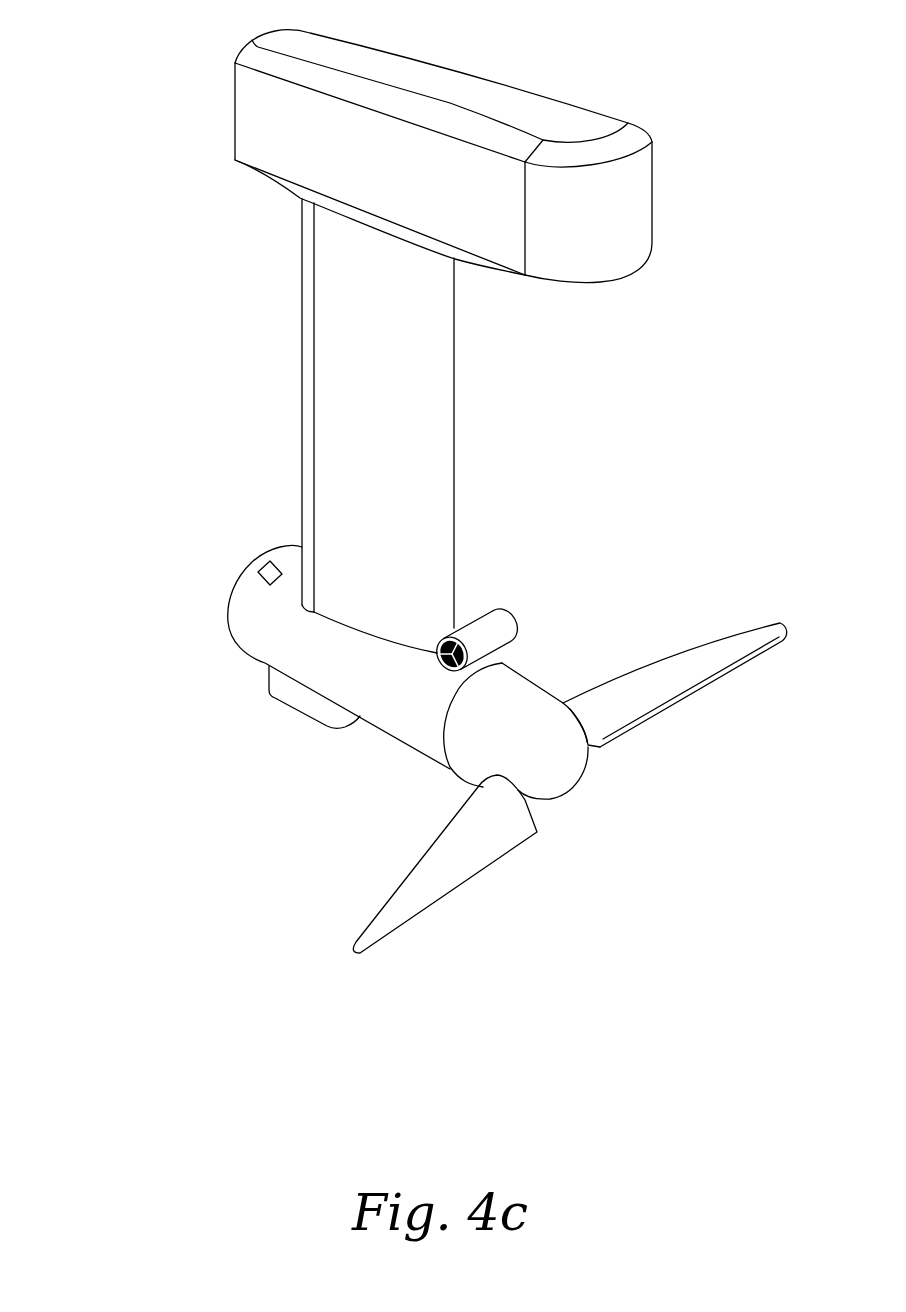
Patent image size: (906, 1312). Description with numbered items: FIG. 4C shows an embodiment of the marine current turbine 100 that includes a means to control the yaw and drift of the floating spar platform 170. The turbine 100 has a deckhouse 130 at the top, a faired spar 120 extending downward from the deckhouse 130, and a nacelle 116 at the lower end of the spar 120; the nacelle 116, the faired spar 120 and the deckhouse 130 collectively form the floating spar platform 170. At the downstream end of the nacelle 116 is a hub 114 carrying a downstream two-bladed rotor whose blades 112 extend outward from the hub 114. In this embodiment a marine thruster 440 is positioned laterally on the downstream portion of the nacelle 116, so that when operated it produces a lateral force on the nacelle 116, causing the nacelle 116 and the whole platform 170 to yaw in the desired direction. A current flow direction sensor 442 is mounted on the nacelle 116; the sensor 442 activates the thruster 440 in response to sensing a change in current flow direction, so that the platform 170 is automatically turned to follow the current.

The marine current turbine system 100 is at (122, 101).
The propeller blade 112 is at (700, 690).
The hub 114 is at (536, 742).
The nacelle 116 is at (346, 662).
The faired spar 120 is at (393, 454).
The deckhouse 130 is at (393, 170).
The floating spar platform 170 is at (552, 393).
The marine thruster 440 is at (508, 625).
The current flow direction sensor 442 is at (262, 563).